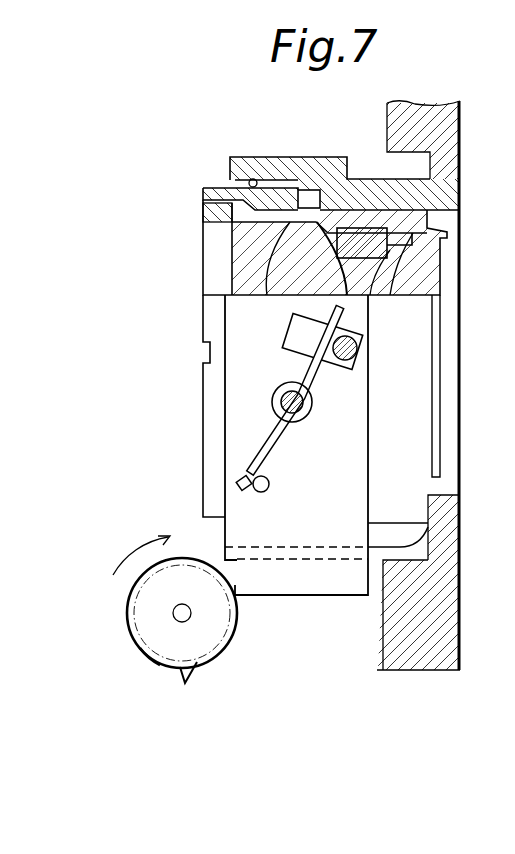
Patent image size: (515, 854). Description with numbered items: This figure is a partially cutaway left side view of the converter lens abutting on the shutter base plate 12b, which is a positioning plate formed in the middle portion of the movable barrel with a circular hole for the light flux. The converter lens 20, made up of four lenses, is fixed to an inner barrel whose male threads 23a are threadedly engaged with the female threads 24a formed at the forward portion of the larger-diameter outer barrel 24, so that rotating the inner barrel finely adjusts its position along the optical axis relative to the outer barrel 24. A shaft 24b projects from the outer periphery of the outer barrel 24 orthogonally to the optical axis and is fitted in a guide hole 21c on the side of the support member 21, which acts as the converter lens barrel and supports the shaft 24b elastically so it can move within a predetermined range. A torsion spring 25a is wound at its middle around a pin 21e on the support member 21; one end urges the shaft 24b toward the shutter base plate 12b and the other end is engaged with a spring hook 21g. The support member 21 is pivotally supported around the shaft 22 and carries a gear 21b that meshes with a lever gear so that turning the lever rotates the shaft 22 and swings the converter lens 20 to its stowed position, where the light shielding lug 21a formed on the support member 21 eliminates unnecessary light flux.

The shutter base plate 12b is at (460, 611).
The converter lens 20 is at (262, 250).
The support member 21 is at (296, 588).
The light shielding lug 21a is at (195, 674).
The gear 21b is at (155, 658).
The guide hole 21c is at (295, 330).
The pin 21e is at (300, 413).
The spring hook 21g is at (270, 486).
The shaft 22 is at (174, 613).
The male threads 23a is at (280, 187).
The outer barrel 24 is at (334, 162).
The female threads 24a is at (252, 178).
The shaft 24b is at (358, 348).
The torsion spring 25a is at (325, 383).